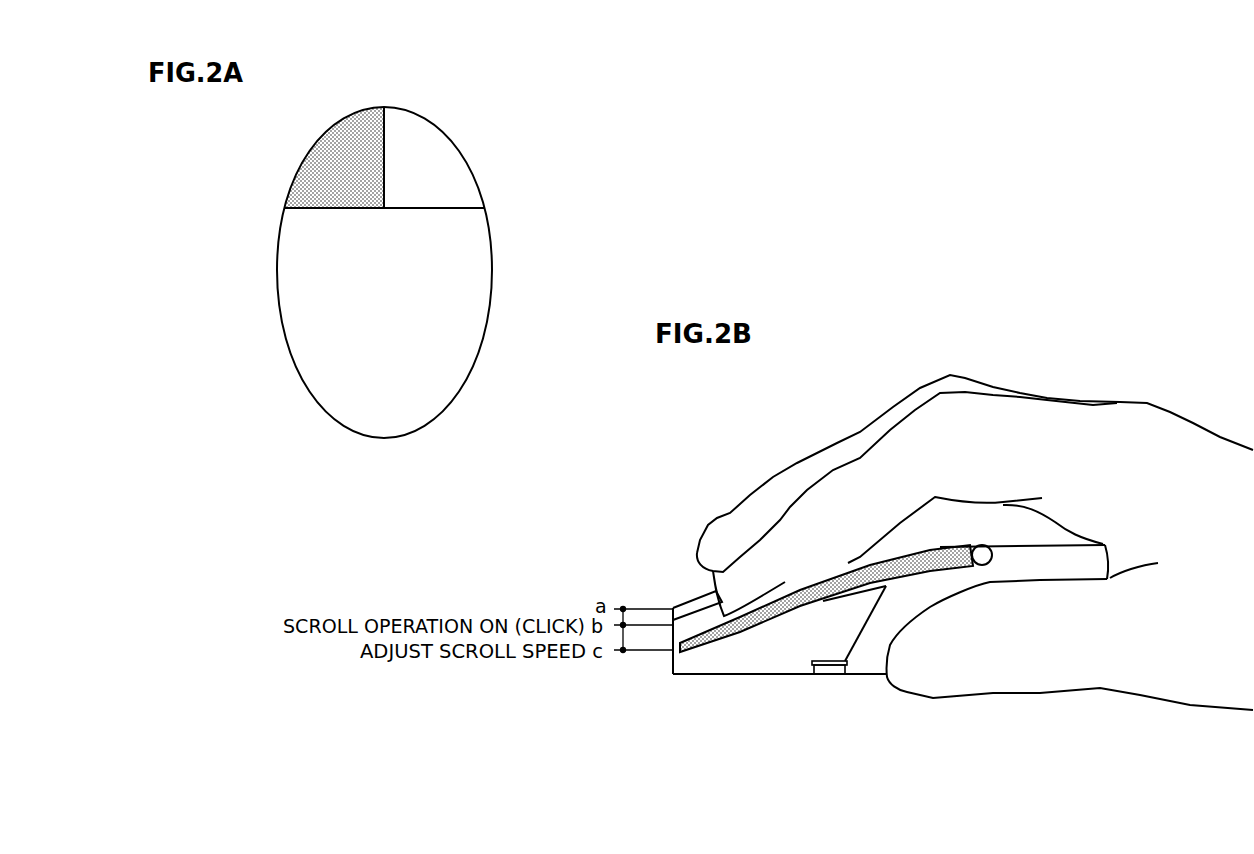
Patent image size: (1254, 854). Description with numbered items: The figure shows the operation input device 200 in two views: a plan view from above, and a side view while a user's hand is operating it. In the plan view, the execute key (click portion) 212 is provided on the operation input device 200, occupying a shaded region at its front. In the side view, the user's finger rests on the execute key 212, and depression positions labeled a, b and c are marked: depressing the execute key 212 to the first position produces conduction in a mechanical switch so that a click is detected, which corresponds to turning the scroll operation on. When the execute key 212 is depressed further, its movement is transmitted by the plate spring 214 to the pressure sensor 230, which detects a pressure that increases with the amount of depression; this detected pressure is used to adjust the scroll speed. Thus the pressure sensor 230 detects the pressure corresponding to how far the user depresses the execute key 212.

In FIG. 2A, the operation input device 200 is at (492, 233).
In FIG. 2B, the operation input device 200 is at (710, 674).
In FIG. 2A, the execute key (click portion) 212 is at (347, 120).
In FIG. 2B, the execute key (click portion) 212 is at (713, 602).
In FIG. 2B, the plate spring 214 is at (857, 640).
In FIG. 2B, the pressure sensor 230 is at (828, 674).